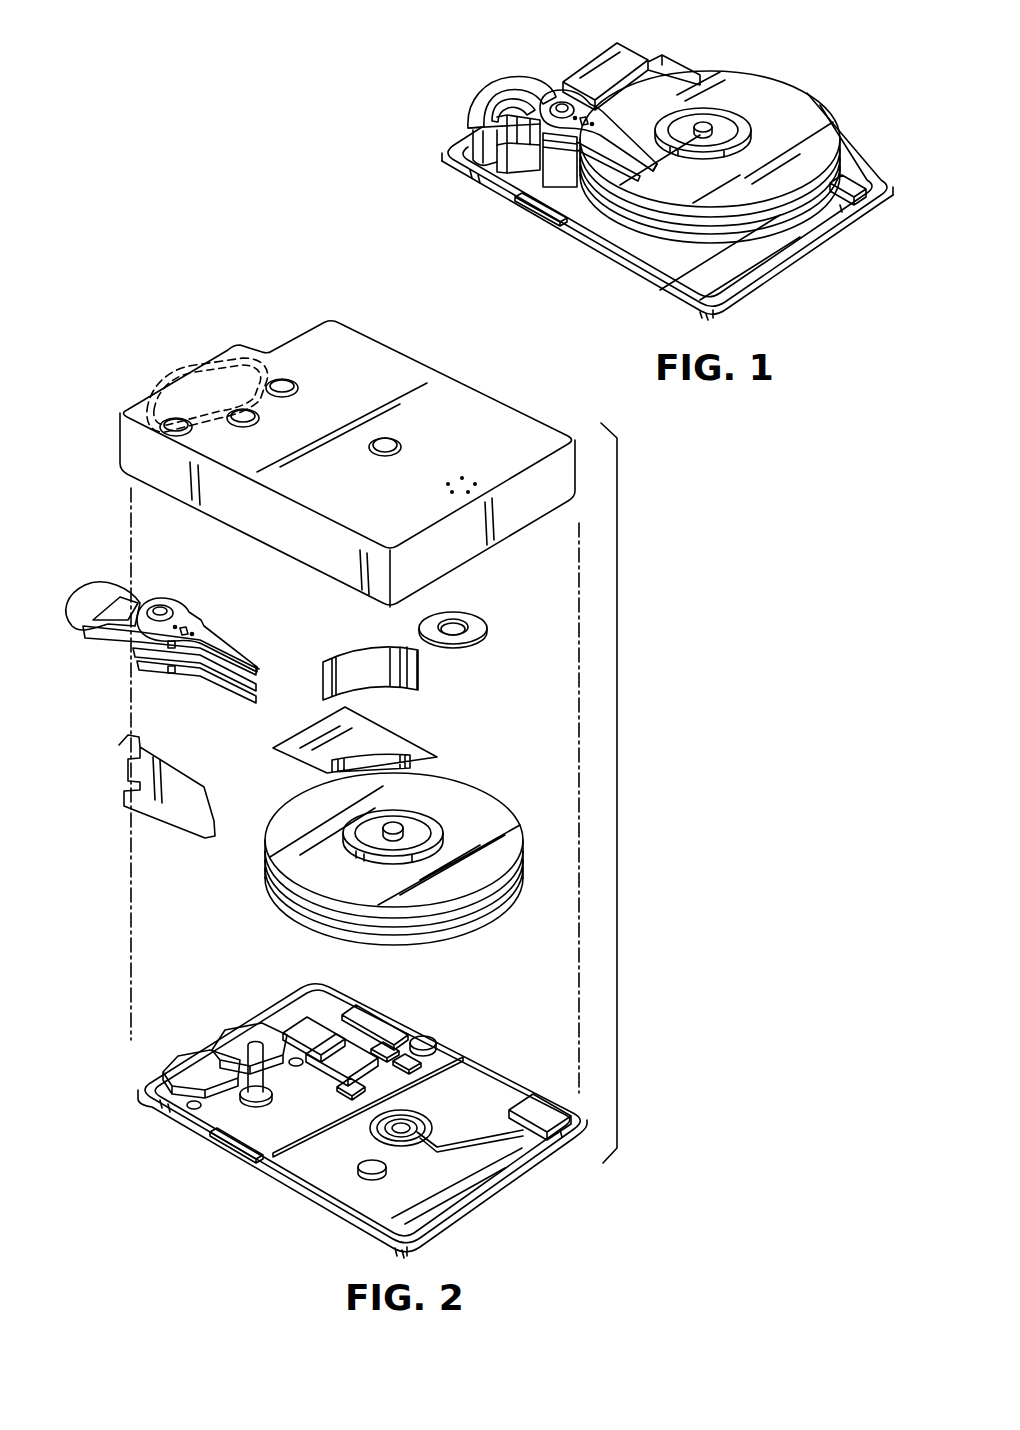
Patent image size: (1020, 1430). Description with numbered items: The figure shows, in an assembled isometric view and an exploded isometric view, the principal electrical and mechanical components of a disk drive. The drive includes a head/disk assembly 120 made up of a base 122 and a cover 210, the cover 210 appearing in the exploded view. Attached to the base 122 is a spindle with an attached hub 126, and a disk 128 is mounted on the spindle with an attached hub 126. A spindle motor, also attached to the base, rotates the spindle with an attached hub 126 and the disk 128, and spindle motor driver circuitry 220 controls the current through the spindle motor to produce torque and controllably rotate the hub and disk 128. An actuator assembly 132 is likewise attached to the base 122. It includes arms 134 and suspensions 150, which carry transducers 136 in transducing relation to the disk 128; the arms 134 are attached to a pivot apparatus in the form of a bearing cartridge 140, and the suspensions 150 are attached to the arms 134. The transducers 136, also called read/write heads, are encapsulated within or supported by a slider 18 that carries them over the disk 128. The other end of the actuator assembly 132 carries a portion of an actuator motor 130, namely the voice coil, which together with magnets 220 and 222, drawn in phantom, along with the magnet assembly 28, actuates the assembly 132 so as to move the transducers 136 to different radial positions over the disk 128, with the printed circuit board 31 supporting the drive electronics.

In FIG. 2, the head slider 18 is at (258, 670).
In FIG. 1, the magnet assembly 28 is at (496, 116).
In FIG. 2, the printed circuit board 31 is at (401, 1012).
In FIG. 1, the head/disk assembly 120 is at (805, 72).
In FIG. 1, the base 122 is at (740, 273).
In FIG. 2, the base 122 is at (460, 1082).
In FIG. 1, the spindle with an attached hub 126 is at (710, 127).
In FIG. 2, the spindle with an attached hub 126 is at (395, 826).
In FIG. 1, the disk 128 is at (817, 118).
In FIG. 2, the disk 128 is at (497, 812).
In FIG. 1, the actuator motor 130 is at (500, 84).
In FIG. 2, the actuator motor 130 is at (90, 597).
In FIG. 1, the actuator assembly 132 is at (515, 175).
In FIG. 2, the actuator assembly 132 is at (153, 665).
In FIG. 1, the arms 134 is at (603, 110).
In FIG. 2, the arms 134 is at (192, 610).
In FIG. 1, the transducers 136 is at (651, 173).
In FIG. 1, the bearing cartridge 140 is at (562, 101).
In FIG. 2, the bearing cartridge 140 is at (160, 605).
In FIG. 1, the suspensions 150 is at (612, 166).
In FIG. 2, the suspensions 150 is at (228, 648).
In FIG. 2, the cover 210 is at (480, 415).
In FIG. 2, the spindle motor driver circuitry 220 is at (193, 1043).
In FIG. 2, the magnet 222 is at (207, 368).